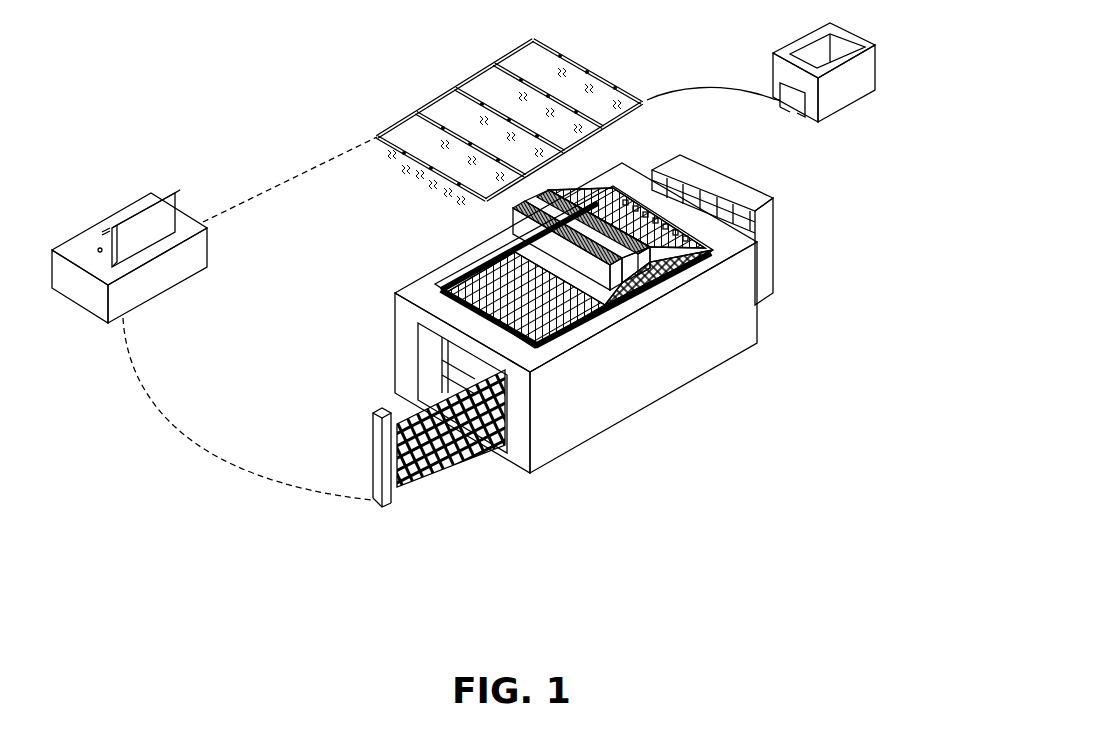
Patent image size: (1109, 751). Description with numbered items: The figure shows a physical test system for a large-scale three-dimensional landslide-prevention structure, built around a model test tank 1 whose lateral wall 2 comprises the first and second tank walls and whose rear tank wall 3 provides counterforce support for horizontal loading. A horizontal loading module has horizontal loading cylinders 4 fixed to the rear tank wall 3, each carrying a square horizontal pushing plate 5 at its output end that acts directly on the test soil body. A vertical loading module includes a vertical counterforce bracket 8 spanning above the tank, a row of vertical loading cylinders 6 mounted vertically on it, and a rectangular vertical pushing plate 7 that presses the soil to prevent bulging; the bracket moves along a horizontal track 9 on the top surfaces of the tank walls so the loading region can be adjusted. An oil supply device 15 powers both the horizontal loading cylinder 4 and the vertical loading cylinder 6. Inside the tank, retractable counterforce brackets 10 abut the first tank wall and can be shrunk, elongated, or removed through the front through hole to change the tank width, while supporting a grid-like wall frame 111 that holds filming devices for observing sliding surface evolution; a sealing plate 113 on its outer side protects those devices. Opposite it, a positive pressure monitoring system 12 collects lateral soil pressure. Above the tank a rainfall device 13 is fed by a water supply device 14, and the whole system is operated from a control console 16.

The model test tank 1 is at (743, 310).
The lateral wall 2 is at (550, 413).
The rear tank wall 3 is at (687, 217).
The horizontal loading cylinder 4 is at (690, 227).
The horizontal pushing plate 5 is at (640, 230).
The vertical loading cylinder 6 is at (510, 242).
The vertical pushing plate 7 is at (500, 252).
The vertical counterforce bracket 8 is at (625, 288).
The horizontal track 9 is at (438, 283).
The retractable counterforce bracket 10 is at (423, 488).
The positive pressure monitoring system 12 is at (463, 278).
The rainfall device 13 is at (625, 92).
The water supply device 14 is at (837, 70).
The oil supply device 15 is at (730, 177).
The control console 16 is at (127, 213).
The wall frame 111 is at (500, 353).
The sealing plate 113 is at (572, 333).